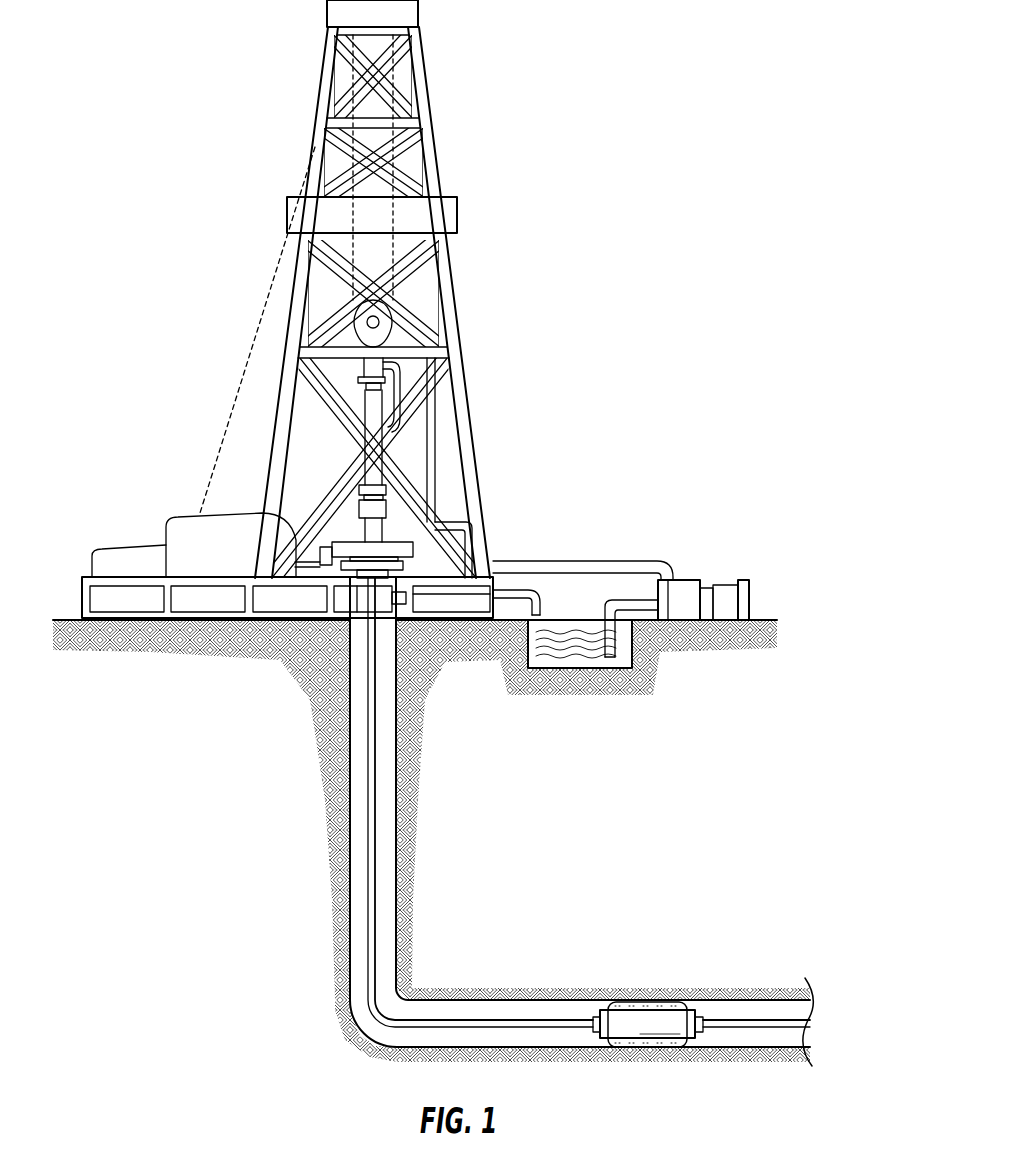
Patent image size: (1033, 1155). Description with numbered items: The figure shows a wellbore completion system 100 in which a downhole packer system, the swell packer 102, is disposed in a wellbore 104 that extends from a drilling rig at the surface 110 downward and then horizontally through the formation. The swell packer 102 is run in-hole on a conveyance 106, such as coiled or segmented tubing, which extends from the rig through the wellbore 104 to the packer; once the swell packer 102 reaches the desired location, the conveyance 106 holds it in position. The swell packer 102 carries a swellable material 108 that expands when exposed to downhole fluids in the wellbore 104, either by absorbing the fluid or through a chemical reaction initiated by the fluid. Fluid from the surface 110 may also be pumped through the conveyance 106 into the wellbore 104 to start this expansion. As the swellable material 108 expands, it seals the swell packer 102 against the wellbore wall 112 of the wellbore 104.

The wellbore completion system 100 is at (690, 85).
The swell packer 102 is at (645, 1000).
The wellbore 104 is at (387, 805).
The conveyance 106 is at (368, 862).
The swellable material 108 is at (677, 1003).
The surface 110 is at (763, 618).
The wellbore wall 112 is at (523, 1000).